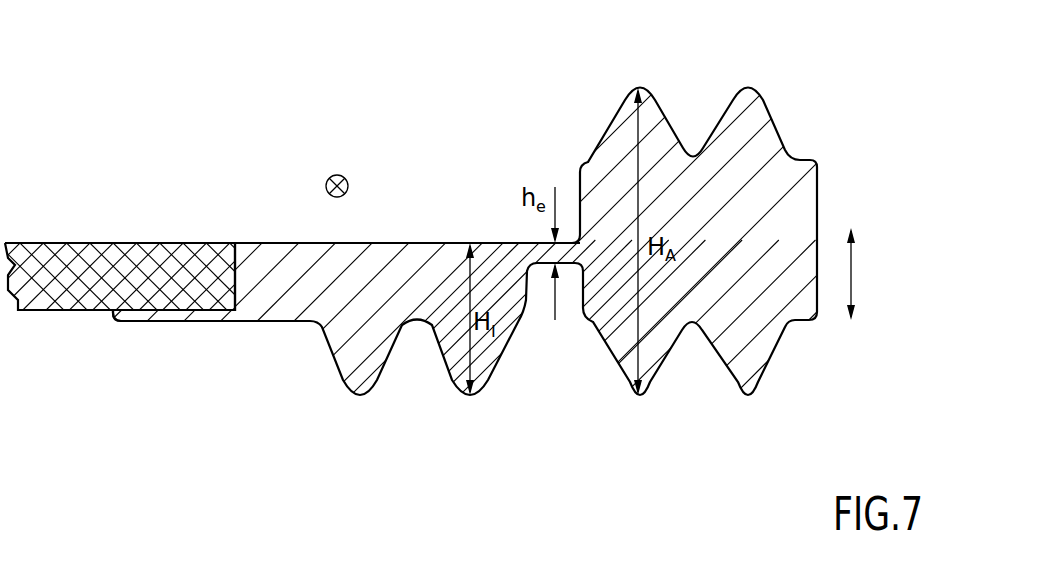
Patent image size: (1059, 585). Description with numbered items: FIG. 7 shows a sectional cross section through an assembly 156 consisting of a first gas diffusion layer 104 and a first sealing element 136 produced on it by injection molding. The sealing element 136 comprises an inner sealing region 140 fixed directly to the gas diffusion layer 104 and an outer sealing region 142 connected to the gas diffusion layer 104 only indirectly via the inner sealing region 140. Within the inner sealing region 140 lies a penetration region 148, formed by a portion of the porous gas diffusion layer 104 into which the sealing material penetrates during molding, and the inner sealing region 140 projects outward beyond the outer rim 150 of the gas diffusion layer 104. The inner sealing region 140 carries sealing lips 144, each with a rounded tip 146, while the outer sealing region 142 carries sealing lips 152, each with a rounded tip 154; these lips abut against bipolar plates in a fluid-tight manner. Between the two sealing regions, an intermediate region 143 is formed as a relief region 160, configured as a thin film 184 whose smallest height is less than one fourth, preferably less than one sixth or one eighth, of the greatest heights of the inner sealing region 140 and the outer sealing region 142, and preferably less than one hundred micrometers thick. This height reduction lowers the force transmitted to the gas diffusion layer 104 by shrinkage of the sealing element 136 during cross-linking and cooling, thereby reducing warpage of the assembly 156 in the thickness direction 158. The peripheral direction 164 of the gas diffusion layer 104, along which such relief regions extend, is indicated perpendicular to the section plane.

The first gas diffusion layer 104 is at (75, 288).
The first sealing element 136 is at (787, 217).
The inner sealing region 140 is at (338, 318).
The outer sealing region 142 is at (780, 193).
The intermediate region 143 is at (535, 260).
The sealing lip 144 is at (382, 378).
The rounded tip 146 is at (362, 397).
The penetration region 148 is at (211, 250).
The outer rim 150 is at (235, 272).
The sealing lip 152 is at (657, 127).
The rounded tip 154 is at (640, 88).
The assembly 156 is at (131, 230).
The thickness direction 158 is at (855, 277).
The relief region 160 is at (567, 270).
The peripheral direction 164 is at (337, 175).
The film 184 is at (577, 240).